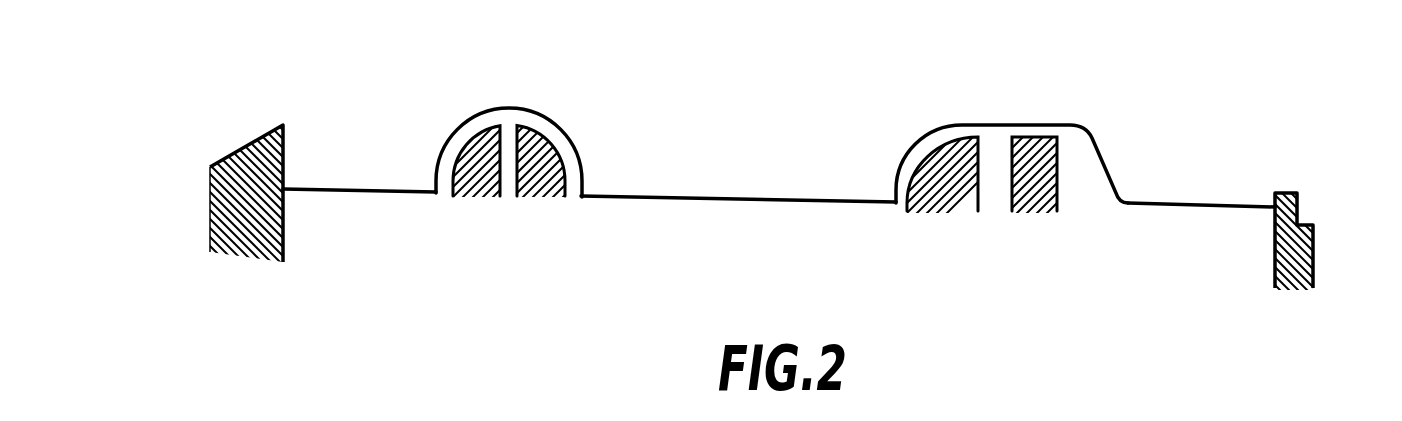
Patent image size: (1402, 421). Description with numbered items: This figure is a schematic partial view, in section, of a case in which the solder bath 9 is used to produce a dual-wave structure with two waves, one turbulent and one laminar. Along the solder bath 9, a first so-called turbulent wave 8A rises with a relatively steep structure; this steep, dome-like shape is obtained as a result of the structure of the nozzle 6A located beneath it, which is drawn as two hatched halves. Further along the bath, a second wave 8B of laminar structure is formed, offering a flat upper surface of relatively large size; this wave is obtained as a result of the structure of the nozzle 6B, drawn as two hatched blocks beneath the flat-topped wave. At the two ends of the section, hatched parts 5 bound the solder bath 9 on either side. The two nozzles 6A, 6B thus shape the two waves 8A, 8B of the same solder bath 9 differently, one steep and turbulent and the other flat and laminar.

The end plate / clamp 5 is at (198, 199).
The nozzle 6A is at (530, 216).
The nozzle 6B is at (1032, 210).
The turbulent wave 8A is at (505, 102).
The laminar wave 8B is at (995, 120).
The solder bath 9 is at (618, 303).